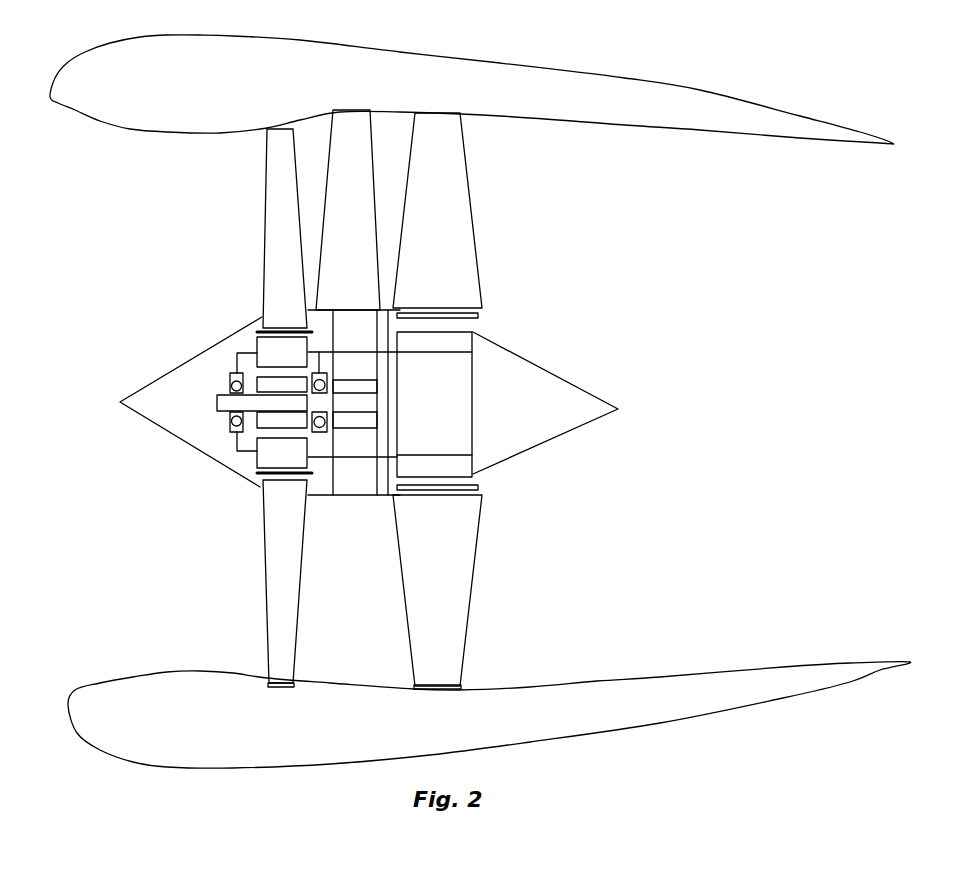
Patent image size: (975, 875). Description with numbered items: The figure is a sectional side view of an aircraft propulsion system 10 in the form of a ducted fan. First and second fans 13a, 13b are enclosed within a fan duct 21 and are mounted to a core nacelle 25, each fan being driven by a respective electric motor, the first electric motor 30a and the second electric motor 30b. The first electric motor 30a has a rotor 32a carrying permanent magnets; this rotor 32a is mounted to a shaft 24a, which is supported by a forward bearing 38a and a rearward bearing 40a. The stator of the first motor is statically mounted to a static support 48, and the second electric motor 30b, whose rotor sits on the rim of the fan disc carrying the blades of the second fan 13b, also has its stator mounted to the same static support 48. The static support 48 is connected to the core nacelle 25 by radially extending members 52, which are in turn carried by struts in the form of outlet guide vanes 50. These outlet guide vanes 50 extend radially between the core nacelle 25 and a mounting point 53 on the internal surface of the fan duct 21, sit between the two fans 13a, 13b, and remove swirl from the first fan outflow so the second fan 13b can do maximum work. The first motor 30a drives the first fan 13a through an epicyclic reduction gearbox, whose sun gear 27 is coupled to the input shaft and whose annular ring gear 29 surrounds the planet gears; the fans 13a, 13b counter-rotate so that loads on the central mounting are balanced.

The propulsion system 10 is at (768, 252).
The first fan 13a is at (263, 273).
The second fan 13b is at (470, 185).
The fan duct 21 is at (213, 135).
The shaft 24a is at (217, 400).
The core nacelle 25 is at (590, 371).
The sun gear 27 is at (233, 415).
The annular ring gear 29 is at (257, 478).
The first electric motor 30a is at (308, 409).
The second electric motor 30b is at (518, 411).
The rotor 32a is at (356, 428).
The forward bearing 38a is at (230, 382).
The rearward bearing 40a is at (319, 432).
The static support 48 is at (388, 352).
The outlet guide vanes 50 is at (335, 237).
The radially extending members 52 is at (378, 345).
The mounting point 53 is at (377, 113).